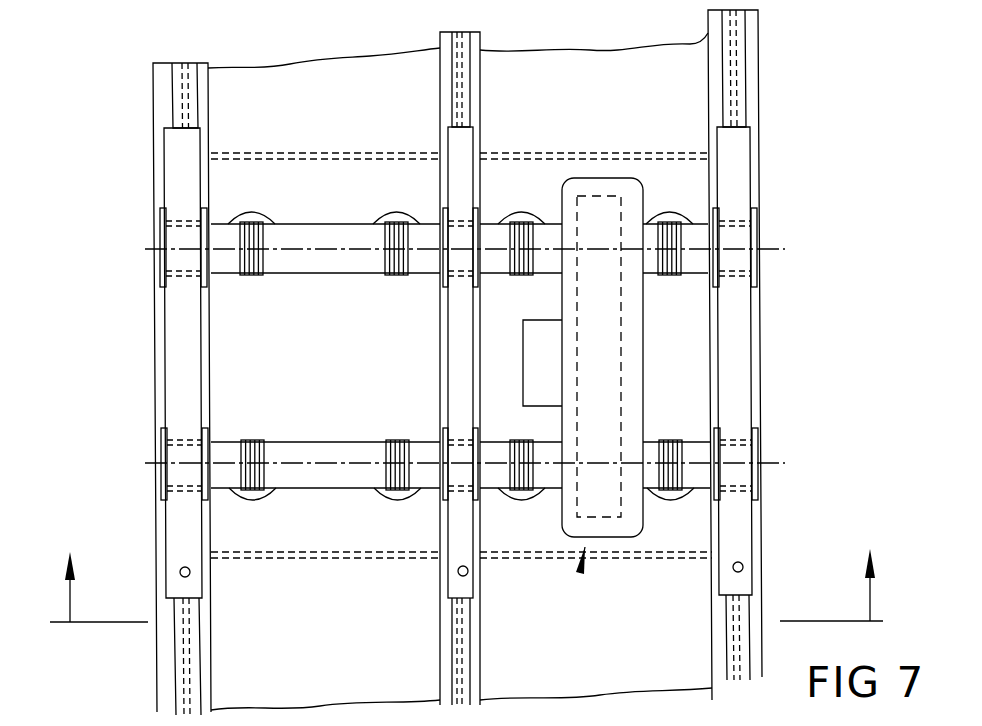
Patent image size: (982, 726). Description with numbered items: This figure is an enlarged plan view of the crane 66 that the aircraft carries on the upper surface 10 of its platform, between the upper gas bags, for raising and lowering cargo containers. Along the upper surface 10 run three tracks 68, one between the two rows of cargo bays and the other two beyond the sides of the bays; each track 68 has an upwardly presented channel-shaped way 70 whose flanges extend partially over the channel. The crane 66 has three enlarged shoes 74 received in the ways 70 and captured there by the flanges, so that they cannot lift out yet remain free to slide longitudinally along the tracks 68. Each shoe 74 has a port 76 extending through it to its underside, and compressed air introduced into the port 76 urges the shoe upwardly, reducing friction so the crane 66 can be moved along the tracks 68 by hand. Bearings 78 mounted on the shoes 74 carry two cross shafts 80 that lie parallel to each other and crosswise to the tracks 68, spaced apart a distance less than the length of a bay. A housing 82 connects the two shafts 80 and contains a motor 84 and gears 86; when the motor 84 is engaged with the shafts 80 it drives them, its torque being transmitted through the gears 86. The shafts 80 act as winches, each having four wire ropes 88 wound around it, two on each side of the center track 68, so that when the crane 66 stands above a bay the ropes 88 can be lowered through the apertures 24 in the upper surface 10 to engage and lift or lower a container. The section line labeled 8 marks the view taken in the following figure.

The section line 8- 8 is at (470, 585).
The upper surface 10 is at (285, 72).
The apertures 24 is at (240, 215).
The crane 66 is at (580, 573).
The tracks 68 is at (160, 103).
The channel-shaped way 70 is at (180, 70).
The shoes 74 is at (180, 352).
The port 76 is at (181, 569).
The bearings 78 is at (160, 232).
The cross shafts 80 is at (332, 262).
The housing 82 is at (562, 190).
The motor 84 is at (538, 365).
The gears 86 is at (588, 196).
The wire ropes 88 is at (256, 276).